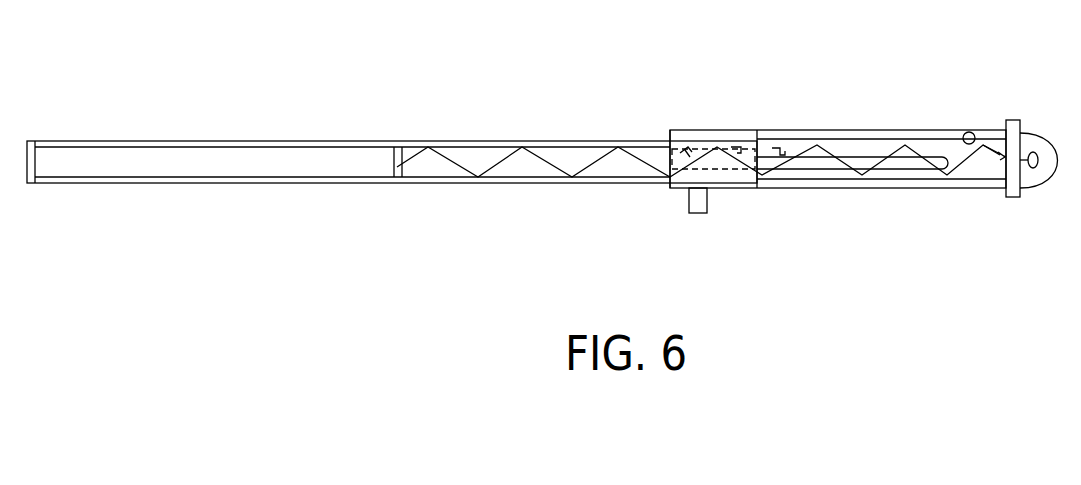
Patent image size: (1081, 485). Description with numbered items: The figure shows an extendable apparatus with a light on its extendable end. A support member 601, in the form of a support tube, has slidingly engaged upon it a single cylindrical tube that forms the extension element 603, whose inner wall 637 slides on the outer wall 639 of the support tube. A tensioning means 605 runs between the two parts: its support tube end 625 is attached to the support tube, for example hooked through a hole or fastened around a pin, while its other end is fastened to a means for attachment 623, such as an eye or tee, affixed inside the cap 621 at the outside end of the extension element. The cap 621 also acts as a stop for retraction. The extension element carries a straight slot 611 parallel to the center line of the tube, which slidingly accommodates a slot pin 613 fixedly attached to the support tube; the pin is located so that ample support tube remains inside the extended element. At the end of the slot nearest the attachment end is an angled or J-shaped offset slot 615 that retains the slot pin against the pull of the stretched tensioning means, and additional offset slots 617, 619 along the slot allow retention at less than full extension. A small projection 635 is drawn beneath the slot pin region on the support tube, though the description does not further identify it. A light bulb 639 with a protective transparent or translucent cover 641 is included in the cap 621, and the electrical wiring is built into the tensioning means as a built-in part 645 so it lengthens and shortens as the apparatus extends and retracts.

The support member 601 is at (478, 183).
The extension element 603 is at (864, 189).
The tensioning means 605 is at (580, 160).
The slot 611 is at (860, 143).
The slot pin 613 is at (681, 188).
The offset slot 615 is at (693, 130).
The additional offset slot 617 is at (740, 130).
The additional offset slot 619 is at (778, 150).
The cap 621 is at (1018, 122).
The means for attachment 623 is at (1005, 185).
The support tube end of the tensioning means 625 is at (398, 150).
The mounting tab 635 is at (700, 215).
The inner wall 637 is at (968, 132).
The outer wall / light bulb 639 is at (570, 183).
The protective cover 641 is at (1040, 148).
The built-in electrical wiring 645 is at (928, 180).